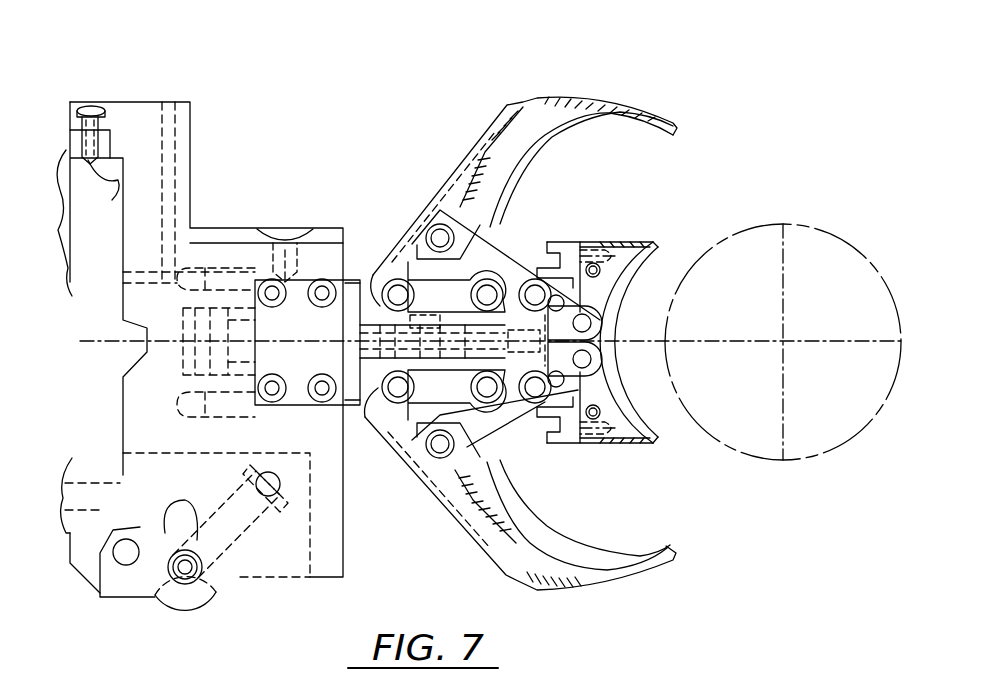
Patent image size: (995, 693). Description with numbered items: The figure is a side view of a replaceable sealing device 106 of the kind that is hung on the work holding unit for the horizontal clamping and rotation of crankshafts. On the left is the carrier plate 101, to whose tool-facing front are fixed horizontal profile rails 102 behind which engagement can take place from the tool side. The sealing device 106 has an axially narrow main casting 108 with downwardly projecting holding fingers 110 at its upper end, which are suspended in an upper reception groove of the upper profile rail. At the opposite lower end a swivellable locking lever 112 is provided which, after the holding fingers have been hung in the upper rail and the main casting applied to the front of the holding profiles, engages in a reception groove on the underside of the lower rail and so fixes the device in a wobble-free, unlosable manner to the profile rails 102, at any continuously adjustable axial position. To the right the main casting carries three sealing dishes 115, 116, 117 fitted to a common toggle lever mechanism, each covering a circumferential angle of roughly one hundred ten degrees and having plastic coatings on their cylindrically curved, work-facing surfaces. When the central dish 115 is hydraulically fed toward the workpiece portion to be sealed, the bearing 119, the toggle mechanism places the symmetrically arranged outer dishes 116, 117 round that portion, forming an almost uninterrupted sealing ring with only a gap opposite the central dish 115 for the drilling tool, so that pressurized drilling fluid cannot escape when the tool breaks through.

The carrier plate 101 is at (74, 250).
The profile rails 102 is at (96, 186).
The replaceable sealing device 106 is at (360, 164).
The main casting 108 is at (230, 232).
The holding fingers 110 is at (122, 150).
The locking lever 112 is at (150, 527).
The central sealing dish 115 is at (667, 256).
The outer sealing dish 116 is at (591, 551).
The outer sealing dish 117 is at (593, 130).
The bearing 119 is at (747, 230).